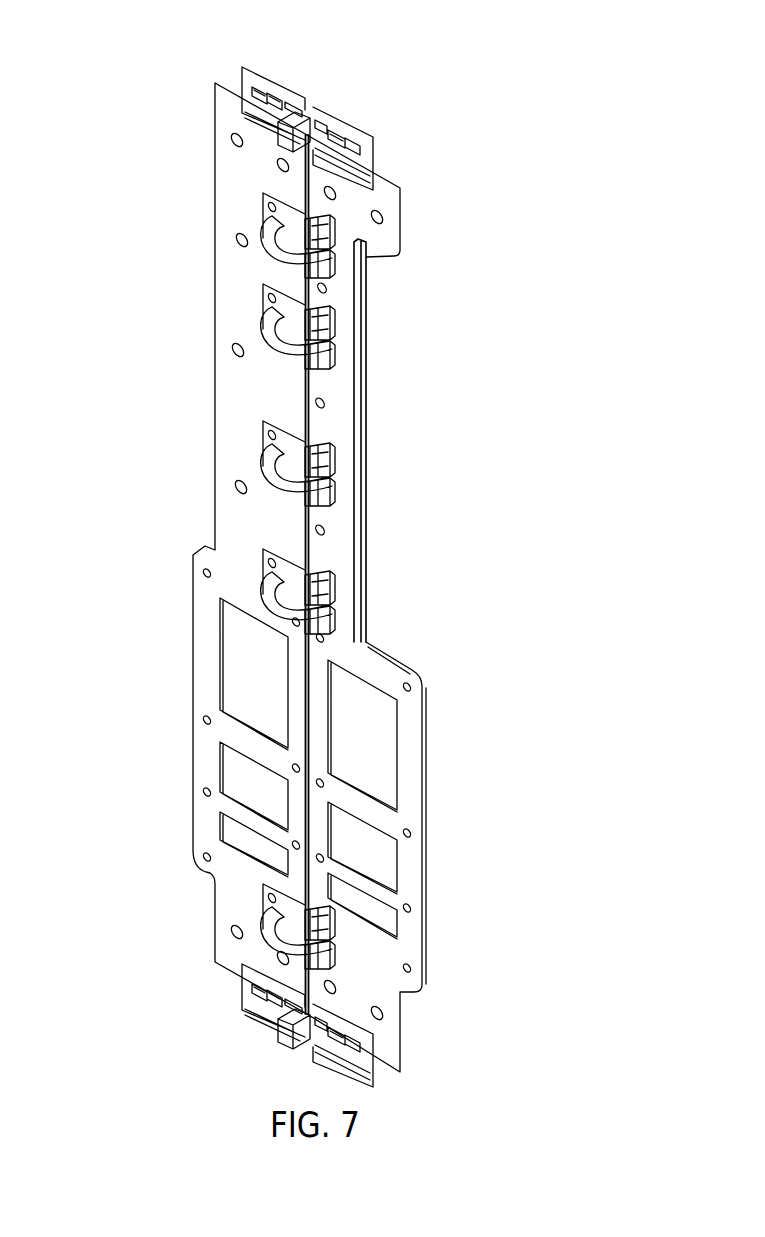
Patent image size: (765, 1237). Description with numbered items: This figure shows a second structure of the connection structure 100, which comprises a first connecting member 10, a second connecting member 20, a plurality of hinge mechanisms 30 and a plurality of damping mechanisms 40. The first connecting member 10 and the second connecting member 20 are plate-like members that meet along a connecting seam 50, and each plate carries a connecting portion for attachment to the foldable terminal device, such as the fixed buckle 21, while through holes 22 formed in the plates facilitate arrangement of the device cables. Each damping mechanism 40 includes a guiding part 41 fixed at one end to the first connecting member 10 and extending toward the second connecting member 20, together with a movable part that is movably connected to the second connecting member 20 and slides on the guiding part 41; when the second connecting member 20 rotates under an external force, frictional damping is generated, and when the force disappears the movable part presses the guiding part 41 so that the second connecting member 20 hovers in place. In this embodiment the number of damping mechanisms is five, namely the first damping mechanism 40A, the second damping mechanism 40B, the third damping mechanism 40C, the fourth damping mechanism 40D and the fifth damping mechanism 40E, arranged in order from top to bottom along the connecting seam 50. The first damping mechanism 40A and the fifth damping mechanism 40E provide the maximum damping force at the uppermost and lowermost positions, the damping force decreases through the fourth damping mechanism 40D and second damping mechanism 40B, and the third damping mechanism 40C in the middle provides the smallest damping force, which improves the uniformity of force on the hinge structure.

The connection structure 100 is at (366, 37).
The first connecting member 10 is at (202, 548).
The second connecting member 20 is at (408, 603).
The fixed buckle 21 is at (366, 242).
The through hole 22 is at (362, 723).
The hinge mechanism 30 is at (245, 114).
The damping mechanism 40 is at (312, 341).
The first damping mechanism 40A is at (328, 223).
The second damping mechanism 40B is at (332, 330).
The third damping mechanism 40C is at (265, 452).
The fourth damping mechanism 40D is at (332, 590).
The fifth damping mechanism 40E is at (270, 910).
The guiding part 41 is at (237, 358).
The connecting seam 50 is at (307, 537).